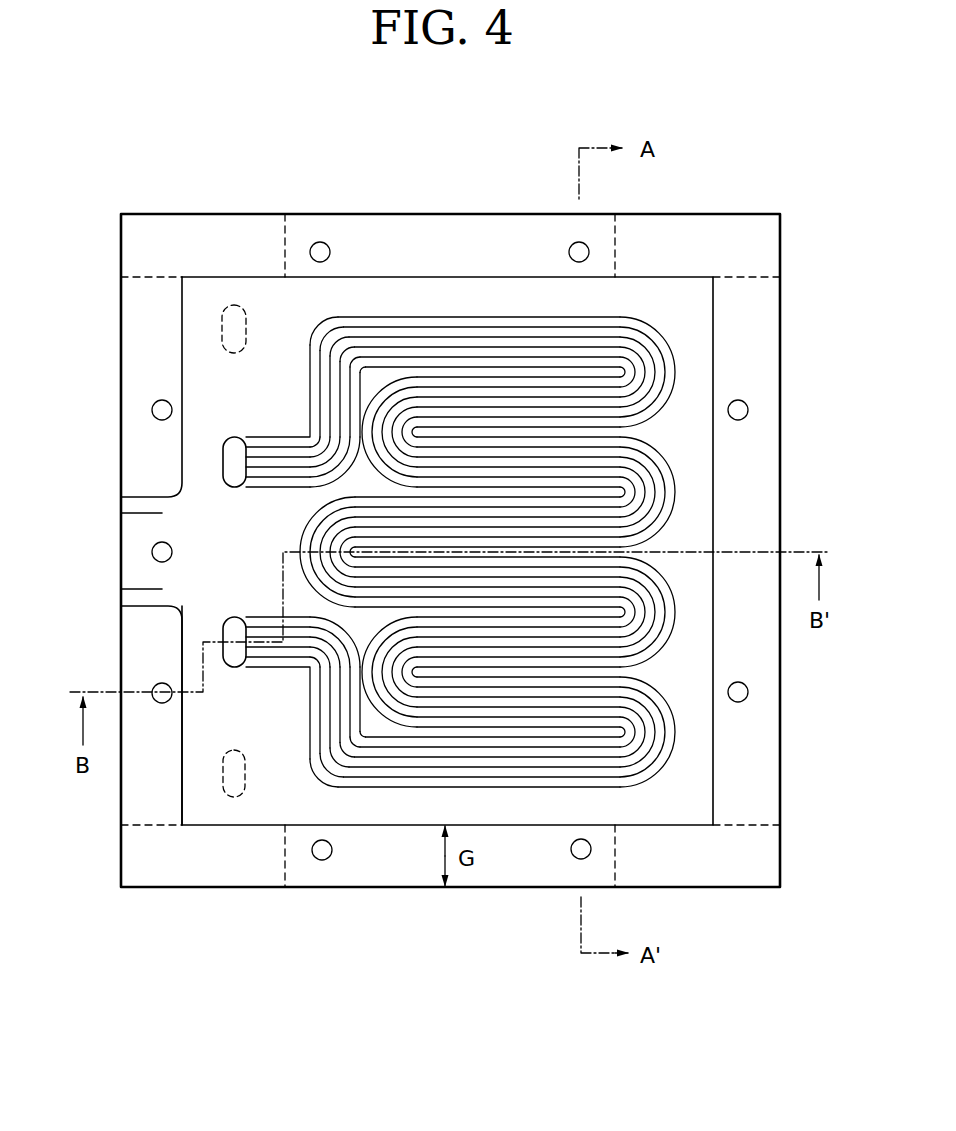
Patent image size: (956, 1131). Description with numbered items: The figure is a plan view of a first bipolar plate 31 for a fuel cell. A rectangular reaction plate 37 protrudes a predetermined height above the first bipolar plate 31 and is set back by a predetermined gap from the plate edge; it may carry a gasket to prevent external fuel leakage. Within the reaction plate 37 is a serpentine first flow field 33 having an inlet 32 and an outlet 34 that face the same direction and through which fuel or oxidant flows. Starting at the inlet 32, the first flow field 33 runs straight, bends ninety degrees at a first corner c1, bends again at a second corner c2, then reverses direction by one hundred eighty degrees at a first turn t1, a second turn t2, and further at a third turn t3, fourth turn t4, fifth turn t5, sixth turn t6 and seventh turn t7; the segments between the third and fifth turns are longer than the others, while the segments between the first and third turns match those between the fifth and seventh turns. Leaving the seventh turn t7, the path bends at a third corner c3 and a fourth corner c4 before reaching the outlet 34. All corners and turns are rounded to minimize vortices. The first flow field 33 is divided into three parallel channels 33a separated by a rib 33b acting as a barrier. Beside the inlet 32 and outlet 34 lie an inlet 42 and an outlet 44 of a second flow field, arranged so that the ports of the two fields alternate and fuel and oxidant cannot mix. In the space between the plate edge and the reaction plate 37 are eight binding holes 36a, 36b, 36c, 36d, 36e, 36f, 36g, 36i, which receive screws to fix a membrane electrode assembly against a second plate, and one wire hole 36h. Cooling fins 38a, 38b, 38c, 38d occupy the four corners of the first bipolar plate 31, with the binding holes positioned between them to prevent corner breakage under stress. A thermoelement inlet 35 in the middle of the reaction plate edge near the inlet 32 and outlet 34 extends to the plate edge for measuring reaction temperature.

The first bipolar plate 31 is at (830, 955).
The inlet 32 is at (222, 641).
The first flow field 33 is at (840, 293).
The channels 33a is at (651, 335).
The rib 33b is at (655, 357).
The outlet 34 is at (222, 460).
The thermoelement inlet 35 is at (138, 588).
The binding hole 36a is at (322, 860).
The binding hole 36b is at (576, 858).
The binding hole 36c is at (748, 692).
The binding hole 36d is at (748, 410).
The binding hole 36e is at (576, 243).
The binding hole 36f is at (320, 242).
The binding hole 36g is at (152, 410).
The wire hole 36h is at (166, 556).
The binding hole 36i is at (158, 702).
The reaction plate 37 is at (700, 797).
The cooling fin 38a is at (148, 870).
The cooling fin 38b is at (730, 870).
The cooling fin 38c is at (716, 228).
The cooling fin 38d is at (164, 233).
The inlet of second flow field 42 is at (233, 328).
The outlet of second flow field 44 is at (229, 798).
The first corner c1 is at (304, 673).
The second corner c2 is at (313, 786).
The third corner c3 is at (311, 323).
The fourth corner c4 is at (303, 432).
The first turn t1 is at (683, 735).
The second turn t2 is at (364, 654).
The third turn t3 is at (683, 612).
The fourth turn t4 is at (297, 543).
The fifth turn t5 is at (683, 492).
The sixth turn t6 is at (361, 451).
The seventh turn t7 is at (683, 368).